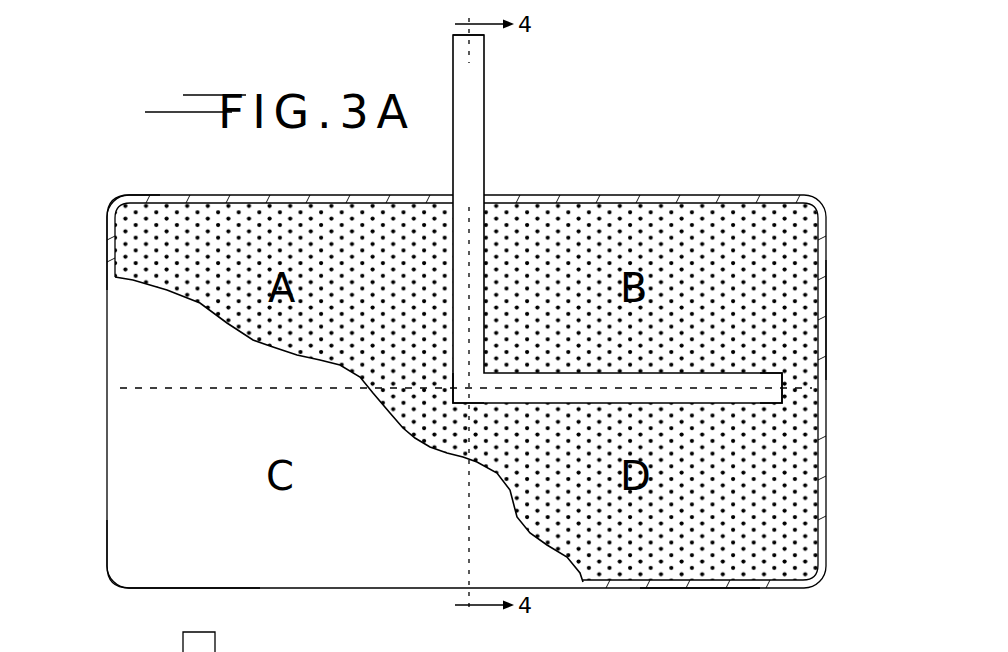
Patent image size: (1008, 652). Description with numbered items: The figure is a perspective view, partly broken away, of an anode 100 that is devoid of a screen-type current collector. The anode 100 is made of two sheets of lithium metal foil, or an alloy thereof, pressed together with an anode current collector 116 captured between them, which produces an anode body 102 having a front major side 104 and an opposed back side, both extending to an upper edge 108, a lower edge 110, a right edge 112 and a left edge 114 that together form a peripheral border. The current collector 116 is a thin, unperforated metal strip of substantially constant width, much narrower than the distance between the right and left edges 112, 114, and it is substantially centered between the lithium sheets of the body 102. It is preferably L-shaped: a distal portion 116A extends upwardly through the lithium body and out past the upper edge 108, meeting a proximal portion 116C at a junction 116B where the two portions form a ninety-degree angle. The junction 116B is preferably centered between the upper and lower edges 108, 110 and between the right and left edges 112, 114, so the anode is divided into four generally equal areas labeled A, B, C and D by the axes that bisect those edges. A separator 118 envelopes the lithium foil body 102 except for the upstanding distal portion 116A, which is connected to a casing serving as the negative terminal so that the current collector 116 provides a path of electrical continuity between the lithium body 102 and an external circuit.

The anode 100 is at (782, 130).
The anode body 102 is at (762, 235).
The front major side 104 is at (767, 553).
The upper edge 108 is at (660, 195).
The lower edge 110 is at (697, 582).
The right edge 112 is at (822, 317).
The left edge 114 is at (110, 250).
The anode current collector 116 is at (476, 163).
The distal portion 116A is at (467, 100).
The junction 116B is at (460, 396).
The proximal portion 116C is at (768, 397).
The separator 118 is at (207, 560).